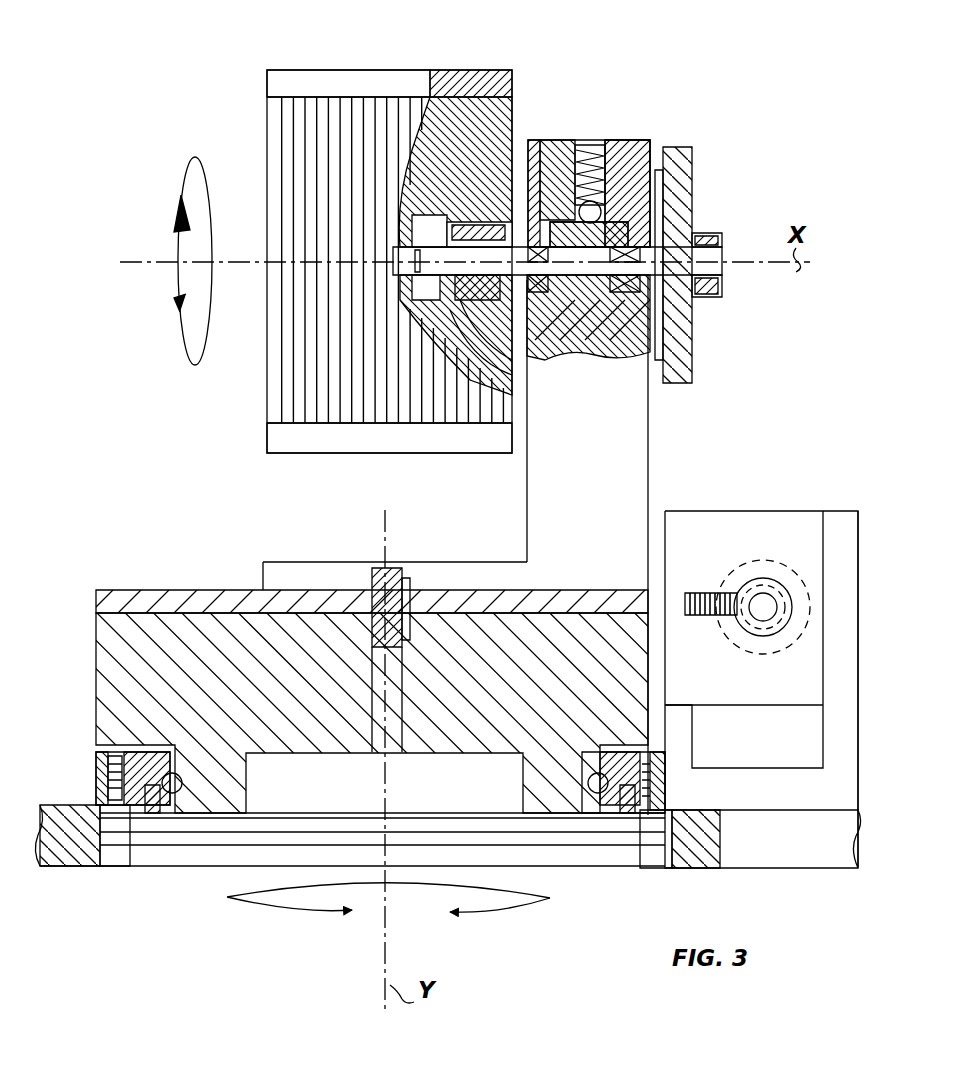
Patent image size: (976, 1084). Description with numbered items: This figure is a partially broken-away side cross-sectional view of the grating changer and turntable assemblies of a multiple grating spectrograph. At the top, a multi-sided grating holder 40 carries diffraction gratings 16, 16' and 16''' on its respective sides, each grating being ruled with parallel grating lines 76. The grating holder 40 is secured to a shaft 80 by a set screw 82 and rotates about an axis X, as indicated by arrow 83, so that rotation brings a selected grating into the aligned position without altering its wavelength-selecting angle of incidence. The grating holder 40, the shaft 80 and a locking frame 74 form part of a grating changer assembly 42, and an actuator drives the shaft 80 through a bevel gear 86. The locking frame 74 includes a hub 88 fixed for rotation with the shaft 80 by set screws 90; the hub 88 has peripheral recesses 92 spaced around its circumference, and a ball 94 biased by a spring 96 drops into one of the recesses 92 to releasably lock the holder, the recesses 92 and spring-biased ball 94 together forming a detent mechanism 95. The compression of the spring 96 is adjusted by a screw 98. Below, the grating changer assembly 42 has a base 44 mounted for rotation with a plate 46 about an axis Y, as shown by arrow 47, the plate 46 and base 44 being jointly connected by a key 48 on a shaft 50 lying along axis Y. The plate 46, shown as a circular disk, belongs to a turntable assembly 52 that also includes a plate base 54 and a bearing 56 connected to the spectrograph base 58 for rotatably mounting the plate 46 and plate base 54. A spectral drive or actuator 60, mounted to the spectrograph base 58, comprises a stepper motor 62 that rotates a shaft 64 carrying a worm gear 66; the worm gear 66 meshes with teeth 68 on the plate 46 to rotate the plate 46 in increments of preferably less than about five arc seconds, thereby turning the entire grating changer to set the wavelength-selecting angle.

The diffraction grating 16 is at (346, 260).
The diffraction grating 16' is at (348, 51).
The diffraction grating 16''' is at (389, 460).
The grating holder 40 is at (267, 112).
The grating changer assembly 42 is at (530, 106).
The base 44 is at (640, 468).
The plate 46 is at (160, 590).
The arrow 47 is at (540, 904).
The key 48 is at (408, 595).
The shaft 50 is at (367, 596).
The turntable assembly 52 is at (96, 712).
The plate base 54 is at (120, 660).
The bearing 56 is at (164, 816).
The spectrograph base 58 is at (72, 848).
The actuator 60 is at (772, 508).
The stepper motor 62 is at (766, 652).
The shaft 64 is at (766, 608).
The worm gear 66 is at (758, 630).
The teeth 68 is at (710, 594).
The locking frame 74 is at (618, 148).
The grating lines 76 is at (298, 198).
The shaft 80 is at (696, 270).
The set screw 82 is at (470, 301).
The arrow 83 is at (186, 164).
The bevel gear 86 is at (682, 164).
The hub 88 is at (692, 234).
The set screws 90 is at (590, 346).
The peripheral recesses 92 is at (584, 202).
The ball 94 is at (604, 228).
The detent mechanism 95 is at (613, 189).
The spring 96 is at (626, 148).
The screw 98 is at (584, 147).